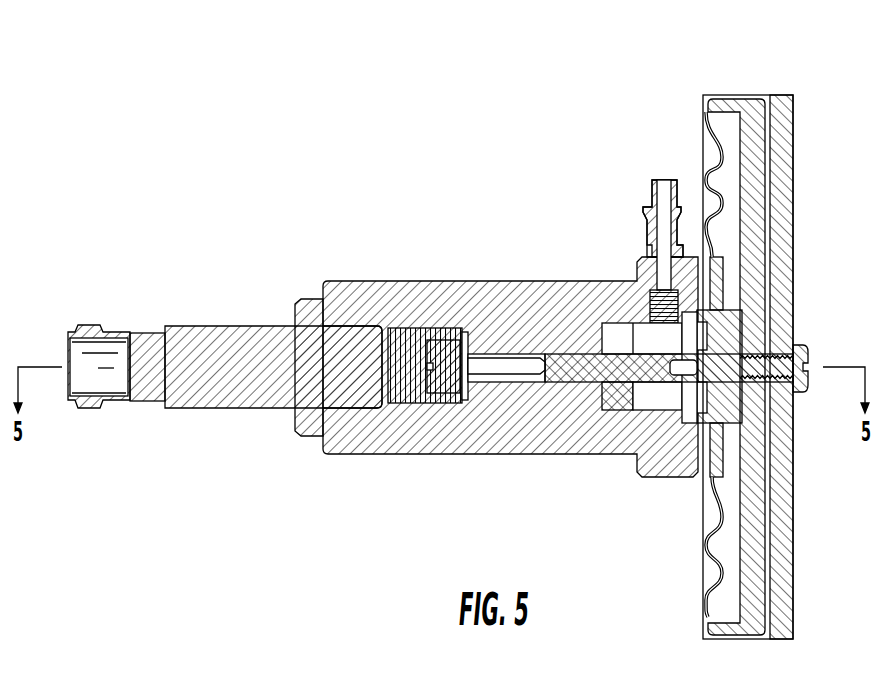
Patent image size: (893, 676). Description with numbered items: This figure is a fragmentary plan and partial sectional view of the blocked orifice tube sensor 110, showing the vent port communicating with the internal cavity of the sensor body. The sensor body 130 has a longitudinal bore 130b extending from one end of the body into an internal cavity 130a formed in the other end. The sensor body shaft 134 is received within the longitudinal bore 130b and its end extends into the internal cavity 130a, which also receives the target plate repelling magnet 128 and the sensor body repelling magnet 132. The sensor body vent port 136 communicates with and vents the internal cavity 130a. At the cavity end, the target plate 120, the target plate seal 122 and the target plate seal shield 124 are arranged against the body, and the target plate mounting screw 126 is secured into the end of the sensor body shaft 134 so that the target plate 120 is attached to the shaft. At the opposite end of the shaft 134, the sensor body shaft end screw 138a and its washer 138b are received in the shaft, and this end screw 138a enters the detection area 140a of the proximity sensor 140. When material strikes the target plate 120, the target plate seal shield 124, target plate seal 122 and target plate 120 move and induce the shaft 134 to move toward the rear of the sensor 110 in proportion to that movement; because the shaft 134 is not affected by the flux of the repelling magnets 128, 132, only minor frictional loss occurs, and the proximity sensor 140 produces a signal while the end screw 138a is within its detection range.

The sensor 110 is at (501, 140).
The target plate 120 is at (748, 103).
The target plate seal 122 is at (703, 145).
The target plate seal shield 124 is at (773, 95).
The target plate mounting screw 126 is at (805, 350).
The target plate repelling magnet 128 is at (732, 397).
The sensor body 130 is at (452, 281).
The internal cavity 130a is at (673, 402).
The longitudinal bore 130b is at (490, 358).
The sensor body repelling magnet 132 is at (617, 407).
The sensor body shaft 134 is at (560, 382).
The sensor body vent port 136 is at (634, 222).
The sensor body shaft end screw 138a is at (437, 403).
The washer 138b is at (465, 400).
The proximity sensor 140 is at (192, 326).
The detection area 140a is at (357, 326).